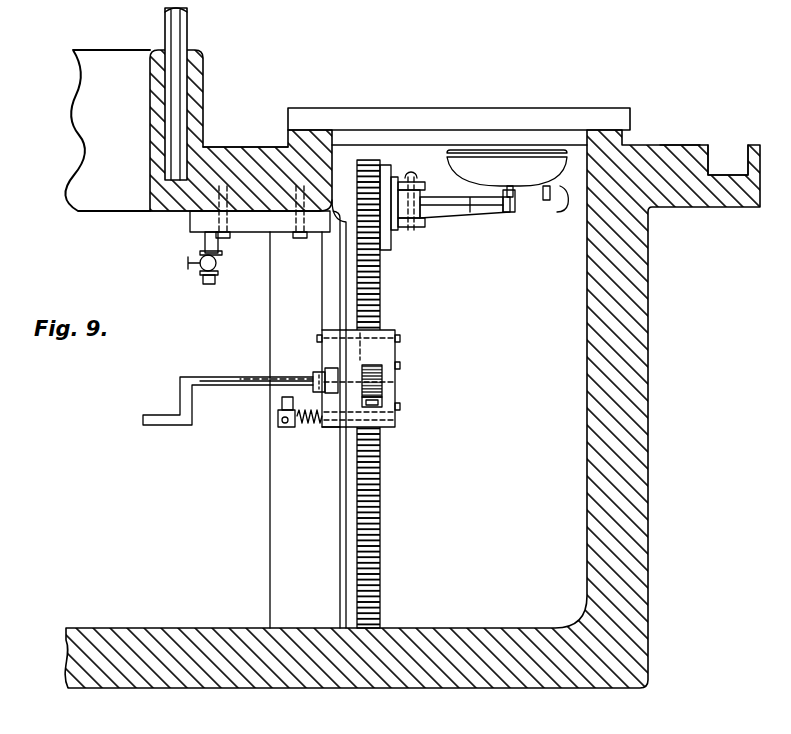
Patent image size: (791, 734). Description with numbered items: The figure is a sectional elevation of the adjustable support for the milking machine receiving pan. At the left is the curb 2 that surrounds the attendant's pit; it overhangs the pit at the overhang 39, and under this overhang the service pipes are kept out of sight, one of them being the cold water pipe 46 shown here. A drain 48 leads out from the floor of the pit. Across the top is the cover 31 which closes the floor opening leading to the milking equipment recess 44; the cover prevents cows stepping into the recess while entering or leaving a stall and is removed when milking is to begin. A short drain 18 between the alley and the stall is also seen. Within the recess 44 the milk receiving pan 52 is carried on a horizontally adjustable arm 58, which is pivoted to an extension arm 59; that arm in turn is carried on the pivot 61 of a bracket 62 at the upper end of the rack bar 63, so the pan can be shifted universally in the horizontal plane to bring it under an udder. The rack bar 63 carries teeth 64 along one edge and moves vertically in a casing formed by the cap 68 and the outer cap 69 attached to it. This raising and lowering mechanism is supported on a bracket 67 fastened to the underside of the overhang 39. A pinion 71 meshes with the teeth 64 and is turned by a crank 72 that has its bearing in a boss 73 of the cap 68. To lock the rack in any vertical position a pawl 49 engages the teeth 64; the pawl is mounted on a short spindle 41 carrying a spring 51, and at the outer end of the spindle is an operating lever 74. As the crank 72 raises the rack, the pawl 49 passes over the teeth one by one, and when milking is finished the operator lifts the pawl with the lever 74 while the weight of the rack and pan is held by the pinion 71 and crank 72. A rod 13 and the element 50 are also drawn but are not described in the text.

The curb 2 is at (205, 90).
The rod 13 is at (187, 26).
The short drain 18 is at (723, 172).
The cover 31 is at (350, 101).
The overhang 39 is at (173, 213).
The short spindle 41 is at (332, 424).
The milking equipment recess 44 is at (593, 502).
The cold water pipe 46 is at (219, 250).
The drain 48 is at (285, 545).
The pawl 49 is at (672, 142).
The shelf 50 is at (263, 135).
The spring 51 is at (322, 424).
The milk receiving pan 52 is at (566, 192).
The horizontally adjustable arm 58 is at (493, 218).
The extension arm 59 is at (453, 218).
The pivot 61 is at (420, 168).
The bracket 62 is at (404, 231).
The rack bar 63 is at (381, 278).
The teeth 64 is at (381, 302).
The bracket 67 is at (323, 257).
The cap 68 is at (353, 424).
The outer cap 69 is at (385, 386).
The pinion 71 is at (380, 368).
The crank 72 is at (187, 392).
The boss 73 is at (313, 373).
The operating lever 74 is at (293, 410).